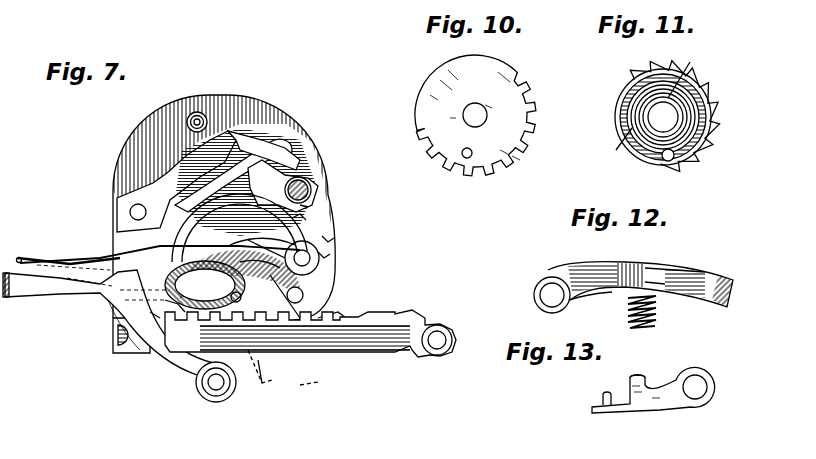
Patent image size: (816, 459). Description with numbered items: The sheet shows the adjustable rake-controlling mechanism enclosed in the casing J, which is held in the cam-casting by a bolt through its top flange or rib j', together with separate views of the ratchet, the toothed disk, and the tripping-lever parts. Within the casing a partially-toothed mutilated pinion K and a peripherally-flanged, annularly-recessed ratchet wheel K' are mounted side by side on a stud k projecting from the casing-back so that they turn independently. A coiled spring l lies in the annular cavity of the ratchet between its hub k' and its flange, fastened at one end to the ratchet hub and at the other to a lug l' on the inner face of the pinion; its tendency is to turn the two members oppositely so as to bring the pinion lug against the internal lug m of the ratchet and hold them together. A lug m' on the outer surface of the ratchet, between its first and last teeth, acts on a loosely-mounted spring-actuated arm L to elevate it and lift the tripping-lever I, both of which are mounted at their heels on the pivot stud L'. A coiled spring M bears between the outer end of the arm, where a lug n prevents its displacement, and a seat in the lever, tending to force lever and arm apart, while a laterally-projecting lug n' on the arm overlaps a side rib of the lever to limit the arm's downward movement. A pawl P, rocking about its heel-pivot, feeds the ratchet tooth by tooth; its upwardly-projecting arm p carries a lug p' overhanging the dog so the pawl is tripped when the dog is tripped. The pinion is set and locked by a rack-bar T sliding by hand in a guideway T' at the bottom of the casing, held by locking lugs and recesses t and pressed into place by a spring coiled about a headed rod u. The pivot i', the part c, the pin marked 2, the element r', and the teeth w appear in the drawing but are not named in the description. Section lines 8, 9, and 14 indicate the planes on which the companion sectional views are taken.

In FIG. 7, the casing J is at (224, 224).
In FIG. 7, the top flange or rib j' is at (181, 126).
In FIG. 7, the upwardly-projecting arm of the pawl p is at (260, 143).
In FIG. 7, the curved arm c is at (245, 182).
In FIG. 7, the pawl P is at (283, 186).
In FIG. 7, the lug p' is at (316, 190).
In FIG. 7, the pin 2 is at (308, 206).
In FIG. 7, the spring arm r' is at (302, 219).
In FIG. 7, the mutilated pinion K is at (240, 247).
In FIG. 10, the mutilated pinion K is at (475, 115).
In FIG. 11, the ratchet wheel K' is at (651, 117).
In FIG. 7, the stud k is at (260, 266).
In FIG. 11, the hub k' is at (663, 117).
In FIG. 7, the coiled spring l is at (262, 243).
In FIG. 11, the coiled spring l is at (681, 75).
In FIG. 7, the lug l' is at (205, 285).
In FIG. 10, the lug l' is at (475, 149).
In FIG. 7, the spring-actuated arm L is at (283, 274).
In FIG. 13, the spring-actuated arm L is at (653, 399).
In FIG. 7, the pivot stud L' is at (335, 246).
In FIG. 7, the coiled spring M is at (160, 252).
In FIG. 12, the coiled spring M is at (654, 312).
In FIG. 7, the lug m is at (233, 298).
In FIG. 11, the lug m is at (664, 172).
In FIG. 7, the lug m' is at (302, 289).
In FIG. 7, the headed rod u is at (167, 303).
In FIG. 7, the ratchet teeth w is at (153, 306).
In FIG. 11, the ratchet teeth w is at (700, 150).
In FIG. 7, the tripping-lever I is at (164, 337).
In FIG. 12, the tripping-lever I is at (633, 281).
In FIG. 7, the handle pivot i' is at (216, 394).
In FIG. 7, the rack-bar T is at (310, 343).
In FIG. 7, the guideway T' is at (332, 306).
In FIG. 7, the lugs and recesses t is at (283, 375).
In FIG. 13, the lug n is at (604, 392).
In FIG. 13, the laterally-projecting lug n' is at (648, 369).
In FIG. 7, the section line 8 8 is at (55, 230).
In FIG. 7, the section line 9 9 is at (296, 18).
In FIG. 7, the section line 14 14 is at (143, 378).